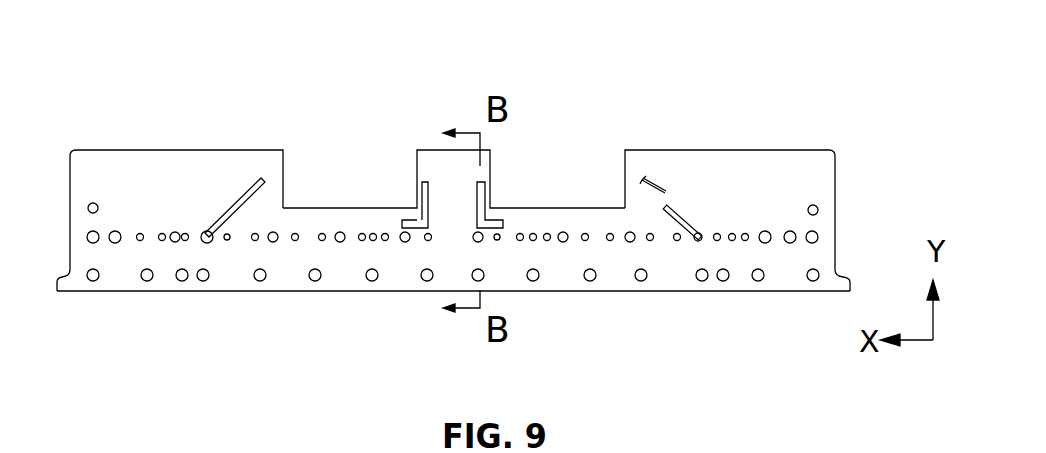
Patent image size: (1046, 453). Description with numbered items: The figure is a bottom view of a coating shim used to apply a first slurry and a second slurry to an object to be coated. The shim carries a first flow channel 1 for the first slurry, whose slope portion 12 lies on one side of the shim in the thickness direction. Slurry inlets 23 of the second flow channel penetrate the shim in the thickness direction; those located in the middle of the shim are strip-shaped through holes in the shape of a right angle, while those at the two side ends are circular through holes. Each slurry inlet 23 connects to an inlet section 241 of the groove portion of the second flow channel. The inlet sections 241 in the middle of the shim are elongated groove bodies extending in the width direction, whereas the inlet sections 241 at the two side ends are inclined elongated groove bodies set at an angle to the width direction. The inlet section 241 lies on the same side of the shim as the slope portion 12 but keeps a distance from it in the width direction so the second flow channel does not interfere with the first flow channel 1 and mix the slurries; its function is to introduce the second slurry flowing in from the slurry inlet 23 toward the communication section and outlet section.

The first flow channel 1 is at (356, 185).
The slope portion 12 is at (282, 150).
The slurry inlet 23 is at (207, 240).
The inlet section 241 is at (237, 200).